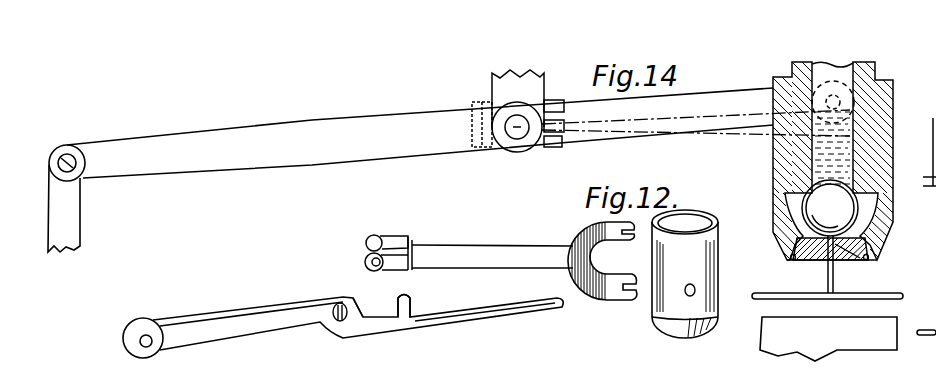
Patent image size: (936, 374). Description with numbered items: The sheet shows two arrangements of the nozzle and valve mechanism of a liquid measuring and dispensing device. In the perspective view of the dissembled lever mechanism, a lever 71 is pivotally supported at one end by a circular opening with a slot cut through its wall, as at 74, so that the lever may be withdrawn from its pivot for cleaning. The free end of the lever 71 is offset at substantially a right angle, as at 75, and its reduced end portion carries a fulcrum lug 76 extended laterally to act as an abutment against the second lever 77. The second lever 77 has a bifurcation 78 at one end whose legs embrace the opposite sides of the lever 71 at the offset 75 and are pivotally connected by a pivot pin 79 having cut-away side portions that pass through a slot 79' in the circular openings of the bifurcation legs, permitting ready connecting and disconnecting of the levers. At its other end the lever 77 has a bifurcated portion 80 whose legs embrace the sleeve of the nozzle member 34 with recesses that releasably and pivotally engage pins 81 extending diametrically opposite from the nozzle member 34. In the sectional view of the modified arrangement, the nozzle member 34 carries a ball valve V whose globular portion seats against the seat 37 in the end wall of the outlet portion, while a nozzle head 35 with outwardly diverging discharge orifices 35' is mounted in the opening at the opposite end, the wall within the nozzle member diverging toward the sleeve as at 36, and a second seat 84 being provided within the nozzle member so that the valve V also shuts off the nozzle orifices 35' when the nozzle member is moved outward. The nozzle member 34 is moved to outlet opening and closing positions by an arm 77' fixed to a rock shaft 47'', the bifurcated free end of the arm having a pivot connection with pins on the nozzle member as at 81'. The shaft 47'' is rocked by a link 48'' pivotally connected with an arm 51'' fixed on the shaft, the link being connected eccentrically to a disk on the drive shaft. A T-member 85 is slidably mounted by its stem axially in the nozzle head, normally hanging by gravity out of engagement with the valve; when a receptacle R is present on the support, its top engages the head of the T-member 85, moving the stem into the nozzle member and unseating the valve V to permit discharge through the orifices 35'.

In FIG. 14, the arm 51'' is at (411, 134).
In FIG. 14, the link 48'' is at (91, 208).
In FIG. 14, the rock shaft 47'' is at (518, 128).
In FIG. 14, the arm 77' is at (696, 99).
In FIG. 14, the pivot connection 81' is at (873, 102).
In FIG. 14, the sleeve portion of nozzle member 34 is at (854, 161).
In FIG. 12, the sleeve portion of nozzle member 34 is at (696, 285).
In FIG. 14, the valve seat 37 is at (858, 200).
In FIG. 14, the valve V is at (852, 208).
In FIG. 14, the valve seat 84 is at (857, 226).
In FIG. 14, the discharge ports or orifices 35' is at (869, 265).
In FIG. 14, the nozzle head 35 is at (846, 265).
In FIG. 14, the T-member 85 is at (795, 293).
In FIG. 14, the receptacle R is at (828, 339).
In FIG. 14, the diverging wall 36 is at (926, 319).
In FIG. 12, the lever 71 is at (333, 326).
In FIG. 12, the slotted circular opening 74 is at (143, 342).
In FIG. 12, the right angle offset 75 is at (359, 309).
In FIG. 12, the fulcrum lug 76 is at (413, 311).
In FIG. 12, the second lever 77 is at (492, 242).
In FIG. 12, the bifurcation 78 is at (377, 238).
In FIG. 12, the pivot pin 79 is at (331, 338).
In FIG. 12, the slot 79' is at (351, 262).
In FIG. 12, the bifurcated portion 80 is at (598, 280).
In FIG. 12, the pins 81 is at (667, 322).